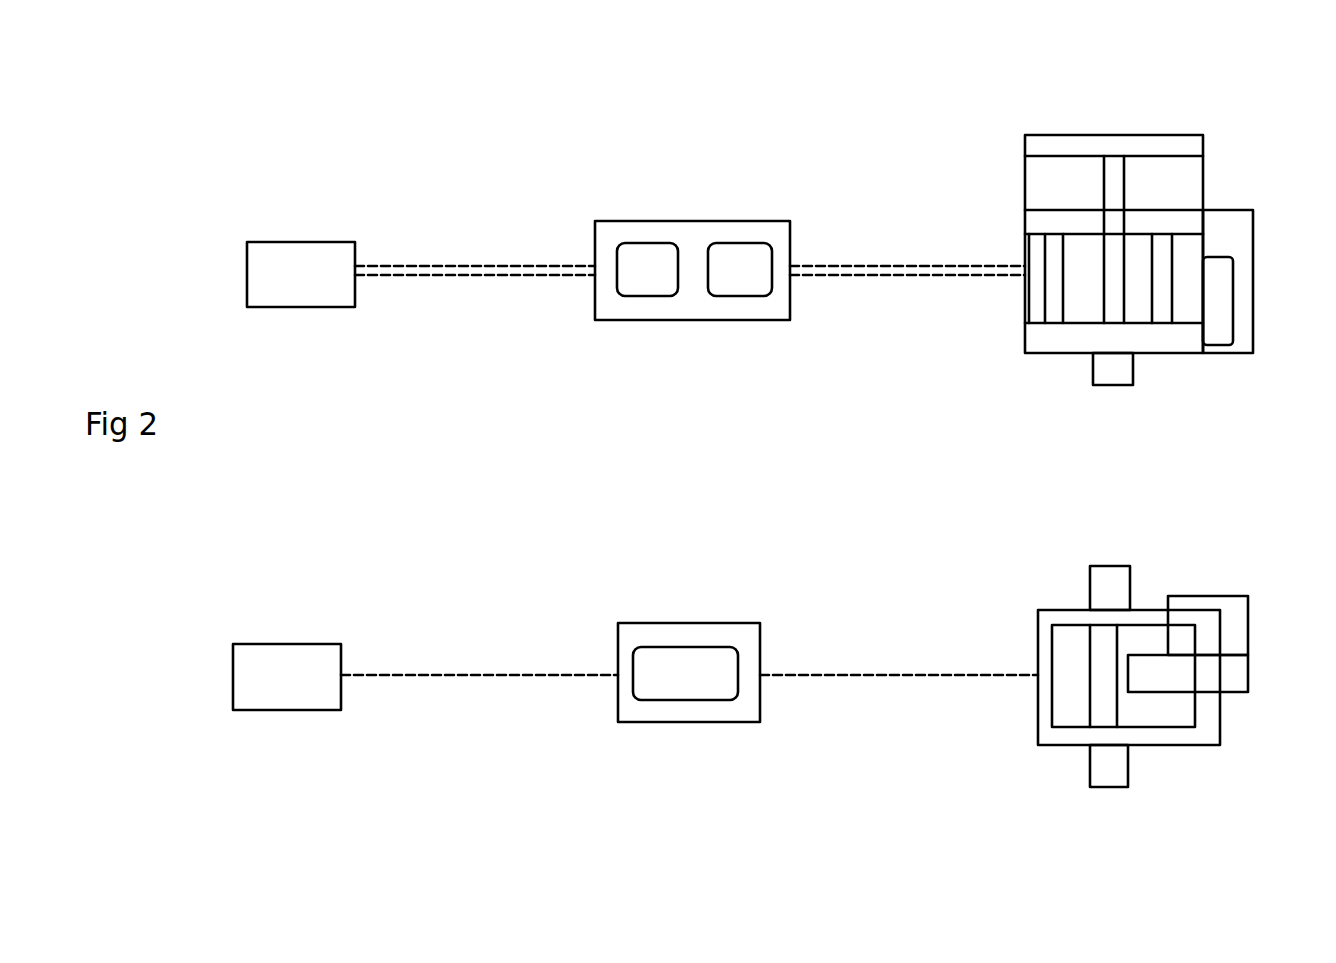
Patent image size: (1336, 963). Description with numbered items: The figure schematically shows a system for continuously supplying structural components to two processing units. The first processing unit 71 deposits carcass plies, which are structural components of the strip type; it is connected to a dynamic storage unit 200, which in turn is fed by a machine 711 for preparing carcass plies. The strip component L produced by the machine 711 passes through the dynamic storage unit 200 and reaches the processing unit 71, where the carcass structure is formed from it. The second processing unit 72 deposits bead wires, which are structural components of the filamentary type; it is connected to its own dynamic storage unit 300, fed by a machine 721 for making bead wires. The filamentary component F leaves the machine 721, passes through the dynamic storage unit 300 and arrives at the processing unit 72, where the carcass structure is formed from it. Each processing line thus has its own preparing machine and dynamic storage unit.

The machine for preparing carcass plies 711 is at (292, 265).
The dynamic storage unit 200 is at (688, 253).
The processing unit for depositing the carcass plies 71 is at (1171, 193).
The strip component L is at (557, 268).
The machine for making bead wires 721 is at (281, 680).
The dynamic storage unit 300 is at (692, 672).
The processing unit for depositing the bead wires 72 is at (1202, 635).
The filamentary component F is at (475, 675).